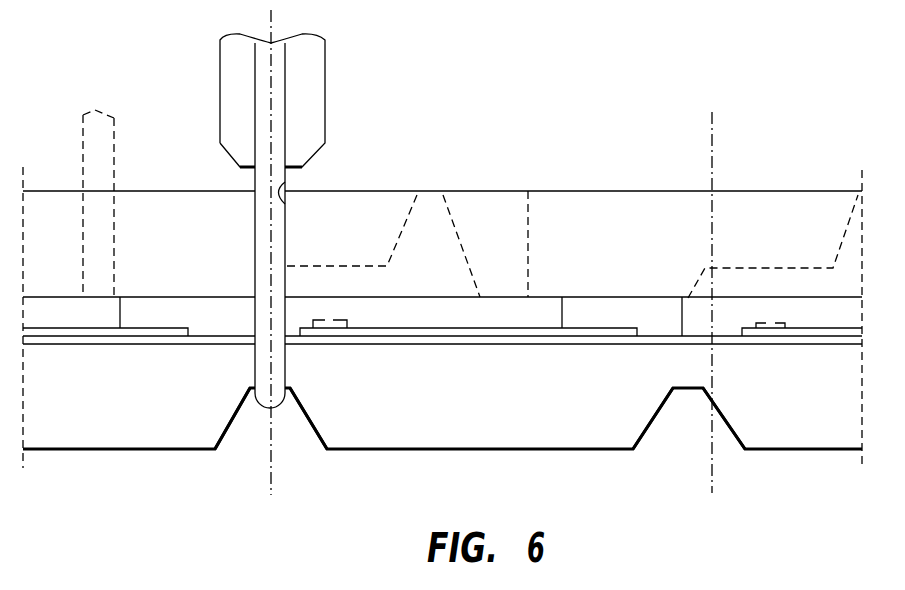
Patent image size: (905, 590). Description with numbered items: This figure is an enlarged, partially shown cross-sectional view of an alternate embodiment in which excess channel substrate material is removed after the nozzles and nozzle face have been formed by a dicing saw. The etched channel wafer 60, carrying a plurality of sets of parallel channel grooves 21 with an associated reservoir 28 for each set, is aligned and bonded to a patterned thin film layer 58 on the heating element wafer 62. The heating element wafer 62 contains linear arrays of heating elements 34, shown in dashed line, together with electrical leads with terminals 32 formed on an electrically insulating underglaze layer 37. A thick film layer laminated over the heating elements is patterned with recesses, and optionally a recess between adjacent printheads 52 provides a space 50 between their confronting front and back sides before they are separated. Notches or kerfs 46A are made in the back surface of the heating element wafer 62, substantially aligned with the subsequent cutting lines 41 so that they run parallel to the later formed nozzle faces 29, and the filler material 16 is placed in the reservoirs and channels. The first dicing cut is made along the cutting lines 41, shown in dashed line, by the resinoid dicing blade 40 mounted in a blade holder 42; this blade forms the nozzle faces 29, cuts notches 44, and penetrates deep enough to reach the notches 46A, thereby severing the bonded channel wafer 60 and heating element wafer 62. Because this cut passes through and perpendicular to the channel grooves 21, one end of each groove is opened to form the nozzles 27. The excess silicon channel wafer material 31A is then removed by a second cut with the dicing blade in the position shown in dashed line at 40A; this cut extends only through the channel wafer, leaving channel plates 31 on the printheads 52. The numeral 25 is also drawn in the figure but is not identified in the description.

The filler material 16 is at (440, 267).
The channel grooves 21 is at (318, 266).
The opening 25 is at (434, 205).
The nozzles 27 is at (285, 280).
The reservoir 28 is at (467, 260).
The nozzle face 29 is at (285, 180).
The channel plates 31 is at (57, 190).
The excess silicon channel wafer material 31A is at (142, 190).
The electrical leads with terminals 32 is at (141, 327).
The heating elements 34 is at (342, 318).
The underglaze layer 37 is at (478, 345).
The dicing blade 40 is at (255, 183).
The dicing blade second-cut position 40A is at (118, 128).
The cutting lines 41 is at (270, 465).
The blade holder 42 is at (325, 73).
The notches 44 is at (262, 352).
The notches or kerfs 46A is at (232, 420).
The space 50 is at (208, 320).
The printheads 52 is at (427, 98).
The patterned thin film layer 58 is at (117, 297).
The channel wafer 60 is at (617, 186).
The heating element wafer 62 is at (428, 453).